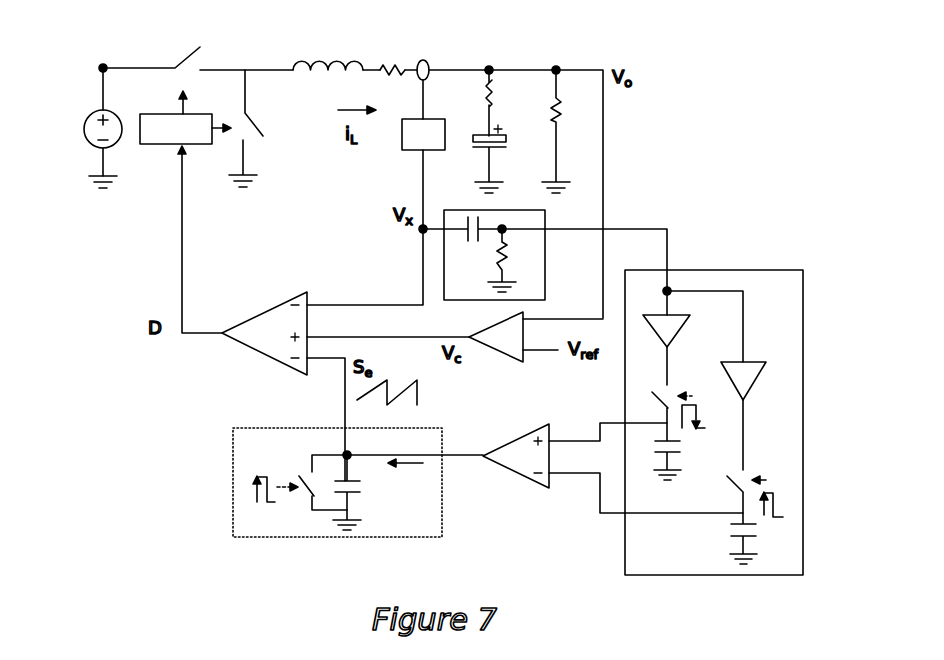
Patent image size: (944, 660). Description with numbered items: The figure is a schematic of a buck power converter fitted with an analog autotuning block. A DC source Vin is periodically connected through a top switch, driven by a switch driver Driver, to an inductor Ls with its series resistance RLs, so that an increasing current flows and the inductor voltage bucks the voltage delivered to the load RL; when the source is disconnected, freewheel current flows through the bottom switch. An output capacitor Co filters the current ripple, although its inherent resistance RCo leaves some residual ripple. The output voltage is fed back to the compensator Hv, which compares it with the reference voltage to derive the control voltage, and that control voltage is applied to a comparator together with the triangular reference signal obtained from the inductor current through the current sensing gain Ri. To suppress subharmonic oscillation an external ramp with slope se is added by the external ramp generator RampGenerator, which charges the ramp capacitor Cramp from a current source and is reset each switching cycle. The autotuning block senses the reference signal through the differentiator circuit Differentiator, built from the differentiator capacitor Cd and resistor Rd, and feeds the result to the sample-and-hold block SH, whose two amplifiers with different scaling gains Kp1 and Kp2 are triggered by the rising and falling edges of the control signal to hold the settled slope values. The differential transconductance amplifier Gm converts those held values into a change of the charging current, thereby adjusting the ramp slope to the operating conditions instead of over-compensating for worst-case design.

The DC input voltage source Vin is at (94, 125).
The switch driver Driver is at (185, 117).
The inductor Ls is at (328, 79).
The inductor series resistance RLs is at (395, 83).
The current sensing gain Ri is at (423, 144).
The capacitor inherent resistance RCo is at (516, 103).
The output capacitor Co is at (505, 159).
The load RL is at (566, 131).
The differentiator circuit Differentiator is at (400, 255).
The differentiator capacitor Cd is at (462, 243).
The differentiator resistor Rd is at (509, 258).
The compensator Hv is at (536, 337).
The external ramp generator RampGenerator is at (358, 499).
The ramp capacitor Cramp is at (368, 492).
The differential transconductance amplifier Gm is at (527, 491).
The sample-and-hold amplifier SH is at (714, 395).
The sample-and-hold scaling gain Kp2 is at (674, 397).
The sample-and-hold scaling gain Kp1 is at (752, 463).